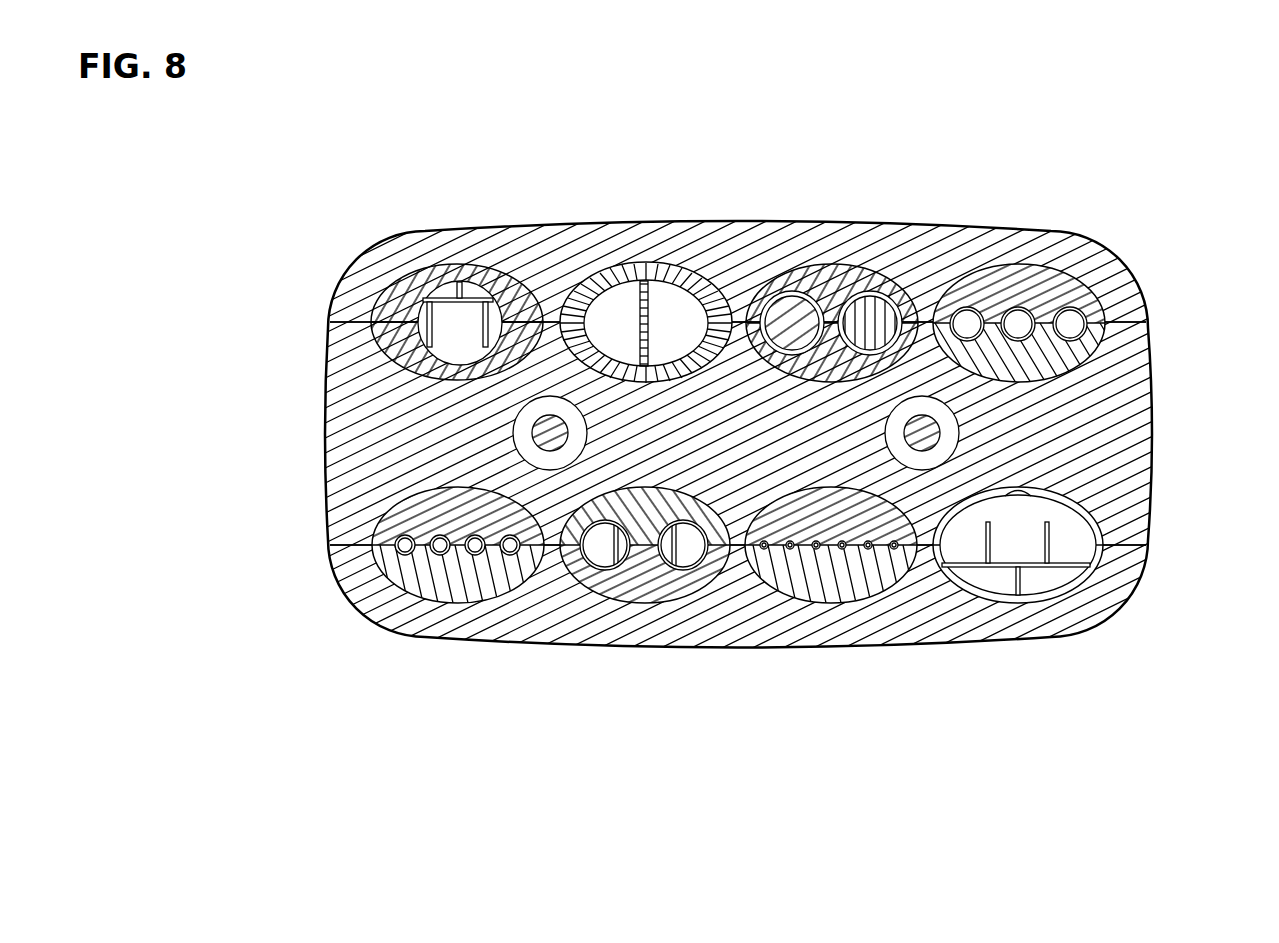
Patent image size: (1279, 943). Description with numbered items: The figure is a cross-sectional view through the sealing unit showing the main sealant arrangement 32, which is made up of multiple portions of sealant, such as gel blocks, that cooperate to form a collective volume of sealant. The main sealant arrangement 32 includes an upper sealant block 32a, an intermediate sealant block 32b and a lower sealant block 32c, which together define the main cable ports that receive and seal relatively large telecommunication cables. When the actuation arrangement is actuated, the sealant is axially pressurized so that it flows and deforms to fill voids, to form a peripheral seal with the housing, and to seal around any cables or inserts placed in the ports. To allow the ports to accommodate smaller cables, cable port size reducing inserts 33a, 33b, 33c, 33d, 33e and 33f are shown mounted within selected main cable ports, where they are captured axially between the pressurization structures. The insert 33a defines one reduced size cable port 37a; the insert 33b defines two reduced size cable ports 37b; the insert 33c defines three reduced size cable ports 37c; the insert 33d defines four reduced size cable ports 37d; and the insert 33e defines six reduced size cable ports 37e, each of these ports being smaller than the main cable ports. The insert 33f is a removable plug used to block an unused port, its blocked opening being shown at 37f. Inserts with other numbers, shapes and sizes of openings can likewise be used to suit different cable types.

The main sealant arrangement 32 is at (1128, 267).
The upper sealant block 32a is at (1143, 297).
The intermediate sealant block 32b is at (1158, 430).
The lower sealant block 32c is at (1145, 568).
The cable port size reducing insert 33a is at (462, 268).
The cable port size reducing insert 33b is at (826, 268).
The cable port size reducing insert 33c is at (1050, 267).
The cable port size reducing insert 33d is at (438, 602).
The cable port size reducing insert 33e is at (820, 603).
The removeable plug 33f is at (687, 283).
The reduced size cable port 37a is at (491, 298).
The reduced size cable ports 37b is at (868, 296).
The reduced size cable ports 37c is at (1016, 308).
The reduced size cable ports 37d is at (476, 556).
The reduced size cable ports 37e is at (869, 550).
The insert 37f is at (663, 286).